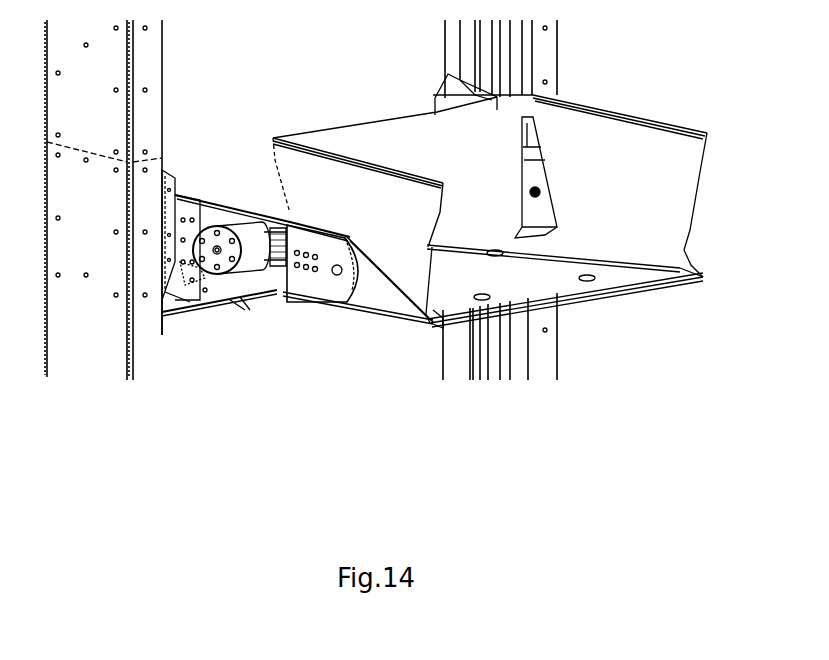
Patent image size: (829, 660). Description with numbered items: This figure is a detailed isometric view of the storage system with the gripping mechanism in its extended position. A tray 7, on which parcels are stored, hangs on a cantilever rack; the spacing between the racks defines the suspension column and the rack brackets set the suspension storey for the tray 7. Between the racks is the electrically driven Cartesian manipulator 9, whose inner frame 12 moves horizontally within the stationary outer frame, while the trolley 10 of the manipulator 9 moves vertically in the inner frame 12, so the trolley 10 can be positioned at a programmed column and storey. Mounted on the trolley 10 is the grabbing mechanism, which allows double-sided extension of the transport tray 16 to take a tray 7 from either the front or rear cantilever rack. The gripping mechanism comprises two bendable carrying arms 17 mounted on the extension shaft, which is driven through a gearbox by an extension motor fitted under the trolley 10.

The tray 7 is at (617, 118).
The Cartesian manipulator 9 is at (220, 280).
The trolley 10 is at (181, 310).
The inner frame 12 is at (564, 349).
The transport tray 16 is at (392, 315).
The bendable carrying arm 17 is at (324, 300).